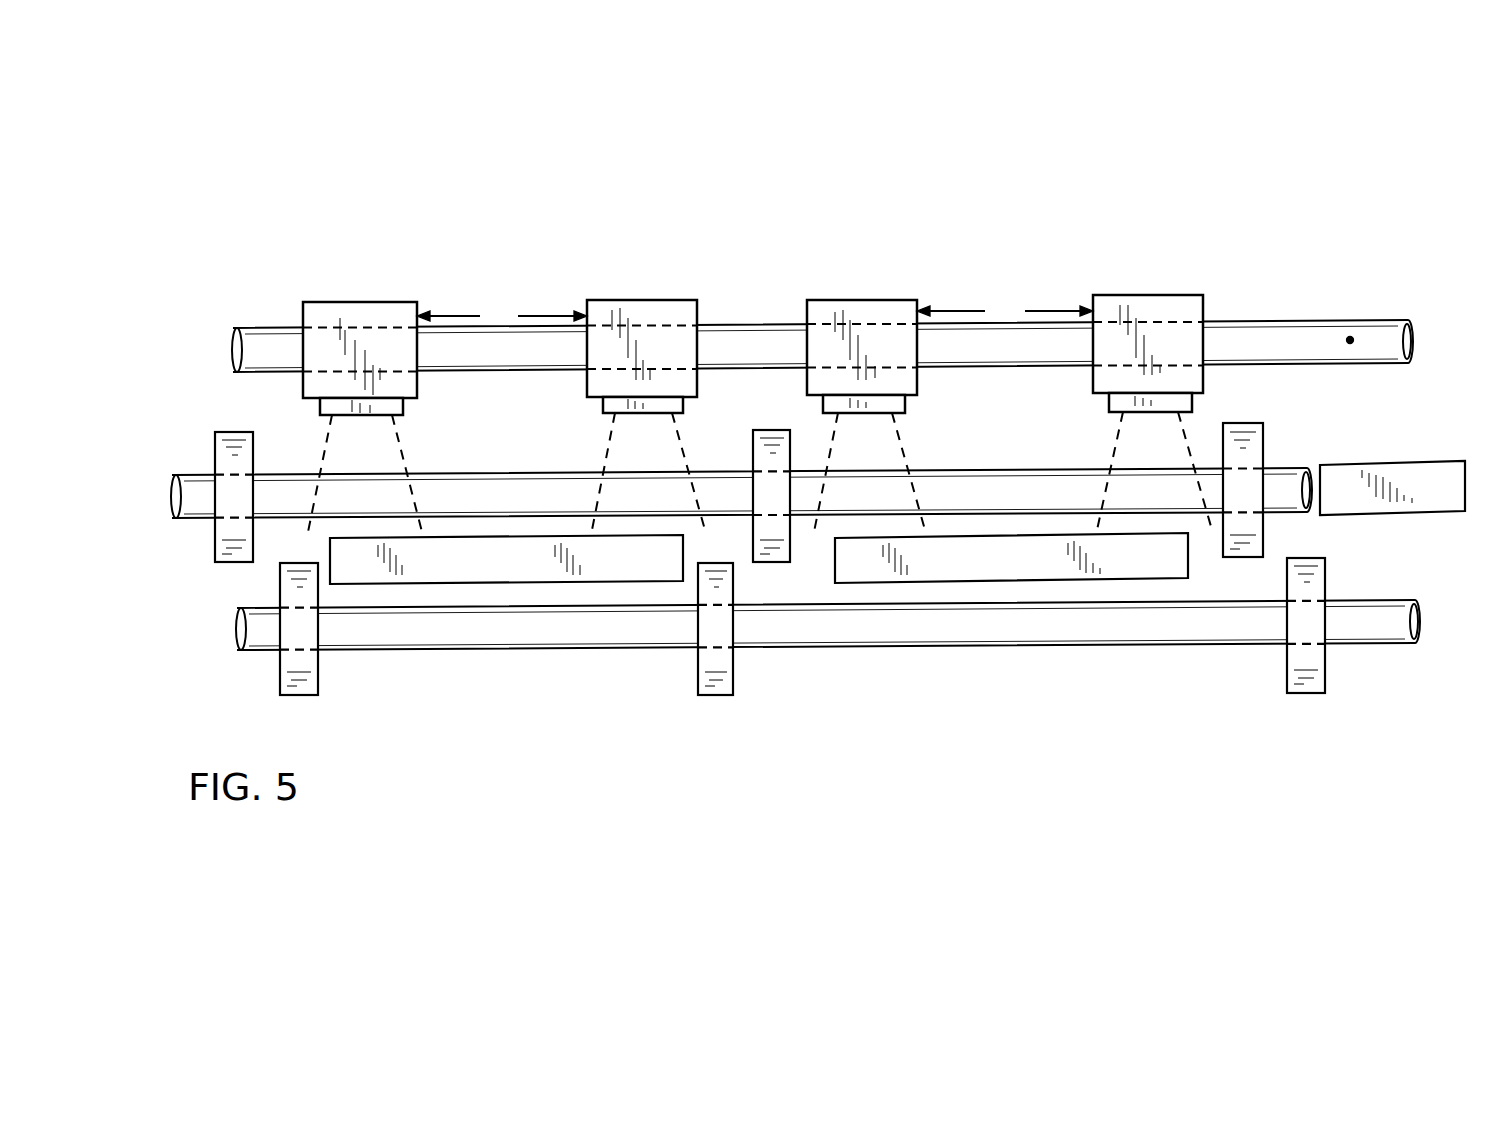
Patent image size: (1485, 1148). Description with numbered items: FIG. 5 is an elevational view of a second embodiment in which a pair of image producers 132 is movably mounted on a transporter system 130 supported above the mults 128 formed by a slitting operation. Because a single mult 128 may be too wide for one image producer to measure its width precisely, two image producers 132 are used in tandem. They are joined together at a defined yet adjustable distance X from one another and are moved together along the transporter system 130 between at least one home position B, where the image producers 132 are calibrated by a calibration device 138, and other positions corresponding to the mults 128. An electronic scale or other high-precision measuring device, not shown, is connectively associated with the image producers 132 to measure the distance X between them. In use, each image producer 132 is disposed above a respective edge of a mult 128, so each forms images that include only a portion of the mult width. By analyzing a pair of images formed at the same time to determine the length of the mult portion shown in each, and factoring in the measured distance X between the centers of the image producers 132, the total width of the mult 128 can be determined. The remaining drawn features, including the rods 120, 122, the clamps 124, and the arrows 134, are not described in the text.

The second transport rod 120 is at (263, 490).
The third transport rod 122 is at (353, 642).
The clamps 124 is at (237, 552).
The mult 128 is at (490, 572).
The transporter system 130 is at (1263, 333).
The image producers 132 is at (370, 316).
The direction of cut arrows 134 is at (363, 453).
The calibration device 138 is at (1383, 507).
The home position B is at (1350, 340).
The distance between image producers X is at (755, 315).